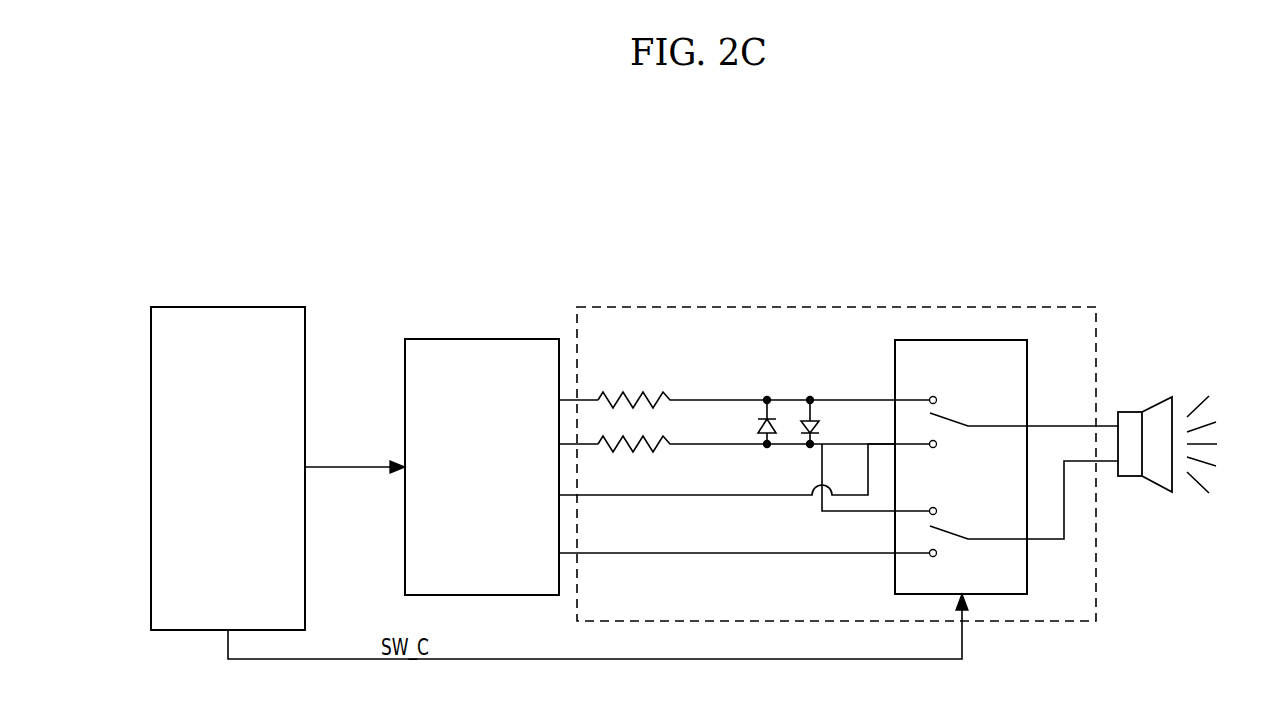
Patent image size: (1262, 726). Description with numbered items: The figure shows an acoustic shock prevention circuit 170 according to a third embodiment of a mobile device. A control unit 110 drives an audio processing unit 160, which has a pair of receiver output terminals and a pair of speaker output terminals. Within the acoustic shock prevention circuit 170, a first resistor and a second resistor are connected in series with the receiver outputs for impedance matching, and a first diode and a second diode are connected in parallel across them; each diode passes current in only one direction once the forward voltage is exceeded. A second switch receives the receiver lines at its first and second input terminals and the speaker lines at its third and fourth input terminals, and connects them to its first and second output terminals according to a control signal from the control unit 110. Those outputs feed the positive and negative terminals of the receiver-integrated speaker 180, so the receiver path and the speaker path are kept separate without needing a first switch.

The control unit 110 is at (265, 307).
The audio processing unit 160 is at (525, 339).
The acoustic shock prevention circuit 170 is at (967, 307).
The receiver-integrated speaker 180 is at (1172, 397).